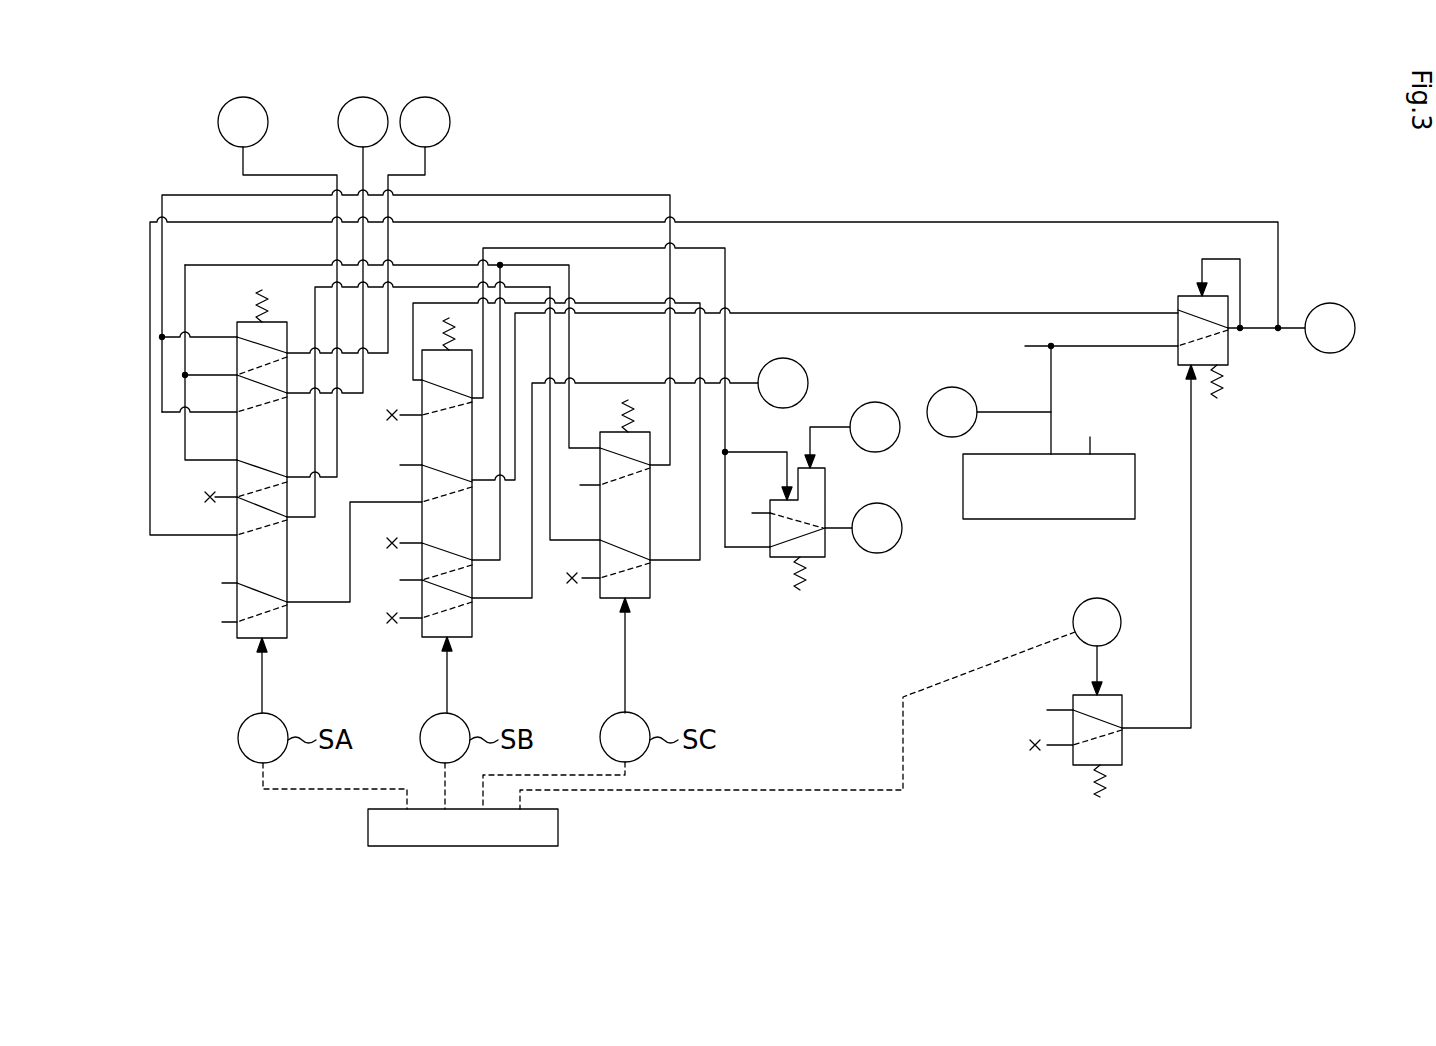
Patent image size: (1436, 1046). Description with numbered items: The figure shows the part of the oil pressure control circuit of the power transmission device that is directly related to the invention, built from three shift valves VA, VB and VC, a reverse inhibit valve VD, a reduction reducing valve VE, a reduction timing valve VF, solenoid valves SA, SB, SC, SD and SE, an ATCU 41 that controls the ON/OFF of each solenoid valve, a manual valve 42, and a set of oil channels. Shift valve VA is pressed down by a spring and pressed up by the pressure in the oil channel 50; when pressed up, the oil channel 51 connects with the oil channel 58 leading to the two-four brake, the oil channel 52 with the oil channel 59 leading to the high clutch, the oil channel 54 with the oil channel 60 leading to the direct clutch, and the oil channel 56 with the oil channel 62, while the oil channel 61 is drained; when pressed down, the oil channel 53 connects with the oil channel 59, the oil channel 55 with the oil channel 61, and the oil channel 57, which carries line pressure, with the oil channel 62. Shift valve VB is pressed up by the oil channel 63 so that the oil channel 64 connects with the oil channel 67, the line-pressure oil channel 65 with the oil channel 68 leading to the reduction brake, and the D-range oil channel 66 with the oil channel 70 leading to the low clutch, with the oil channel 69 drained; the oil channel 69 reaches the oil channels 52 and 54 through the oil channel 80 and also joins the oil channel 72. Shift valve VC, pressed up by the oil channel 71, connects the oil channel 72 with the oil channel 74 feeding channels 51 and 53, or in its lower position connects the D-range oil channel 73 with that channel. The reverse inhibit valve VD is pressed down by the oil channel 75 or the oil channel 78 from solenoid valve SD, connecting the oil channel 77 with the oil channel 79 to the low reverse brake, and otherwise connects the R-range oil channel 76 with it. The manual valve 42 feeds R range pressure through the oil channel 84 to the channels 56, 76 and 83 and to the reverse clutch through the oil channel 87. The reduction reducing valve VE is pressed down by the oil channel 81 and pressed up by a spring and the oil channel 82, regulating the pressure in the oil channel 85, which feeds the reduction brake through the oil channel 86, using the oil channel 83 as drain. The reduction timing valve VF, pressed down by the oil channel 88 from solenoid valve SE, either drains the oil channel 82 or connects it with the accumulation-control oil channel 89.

The ATCU 41 is at (368, 828).
The manual valve 42 is at (1002, 520).
The oil channel 50 is at (262, 698).
The oil channel 51 is at (209, 332).
The oil channel 52 is at (210, 360).
The oil channel 53 is at (216, 412).
The oil channel 54 is at (215, 462).
The oil channel 55 is at (224, 534).
The oil channel 56 is at (222, 583).
The oil channel 57 is at (222, 622).
The oil channel 58 is at (425, 165).
The oil channel 59 is at (363, 162).
The oil channel 60 is at (243, 167).
The oil channel 61 is at (299, 518).
The oil channel 62 is at (310, 605).
The oil channel 63 is at (447, 695).
The oil channel 64 is at (413, 354).
The oil channel 65 is at (400, 465).
The oil channel 66 is at (382, 625).
The oil channel 67 is at (725, 247).
The oil channel 68 is at (598, 316).
The oil channel 69 is at (494, 551).
The oil channel 70 is at (494, 600).
The oil channel 71 is at (625, 680).
The oil channel 72 is at (583, 446).
The oil channel 73 is at (583, 486).
The oil channel 74 is at (593, 194).
The oil channel 75 is at (734, 454).
The oil channel 76 is at (760, 512).
The oil channel 77 is at (759, 548).
The oil channel 78 is at (813, 426).
The oil channel 79 is at (832, 526).
The oil channel 80 is at (410, 262).
The oil channel 81 is at (1202, 262).
The oil channel 82 is at (1192, 492).
The oil channel 83 is at (1151, 348).
The oil channel 84 is at (1051, 436).
The oil channel 85 is at (1234, 334).
The oil channel 86 is at (1300, 345).
The oil channel 87 is at (989, 408).
The oil channel 88 is at (1102, 670).
The oil channel 89 is at (1058, 710).